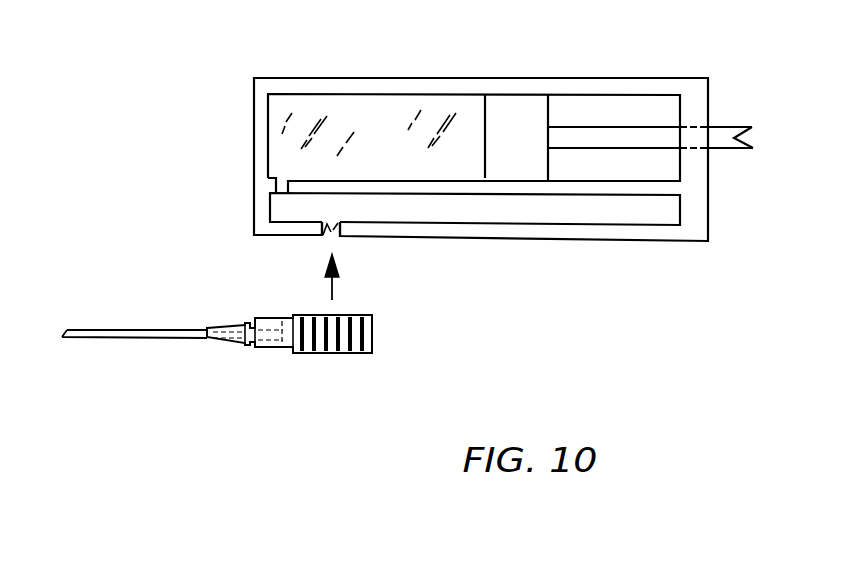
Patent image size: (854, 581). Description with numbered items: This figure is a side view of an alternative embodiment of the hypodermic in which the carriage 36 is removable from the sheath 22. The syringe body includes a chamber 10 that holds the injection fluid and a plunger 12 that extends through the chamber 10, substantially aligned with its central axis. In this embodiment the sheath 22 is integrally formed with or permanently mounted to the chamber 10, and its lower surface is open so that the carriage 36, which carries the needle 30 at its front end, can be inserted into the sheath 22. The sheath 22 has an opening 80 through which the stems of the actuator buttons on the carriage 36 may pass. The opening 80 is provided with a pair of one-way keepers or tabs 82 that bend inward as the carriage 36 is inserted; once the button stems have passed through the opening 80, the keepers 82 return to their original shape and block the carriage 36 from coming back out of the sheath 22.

The chamber 10 is at (423, 86).
The plunger 12 is at (590, 132).
The sheath 22 is at (633, 237).
The opening 80 is at (337, 222).
The one-way keepers or tabs 82 is at (334, 231).
The needle 30 is at (150, 343).
The carriage 36 is at (272, 347).